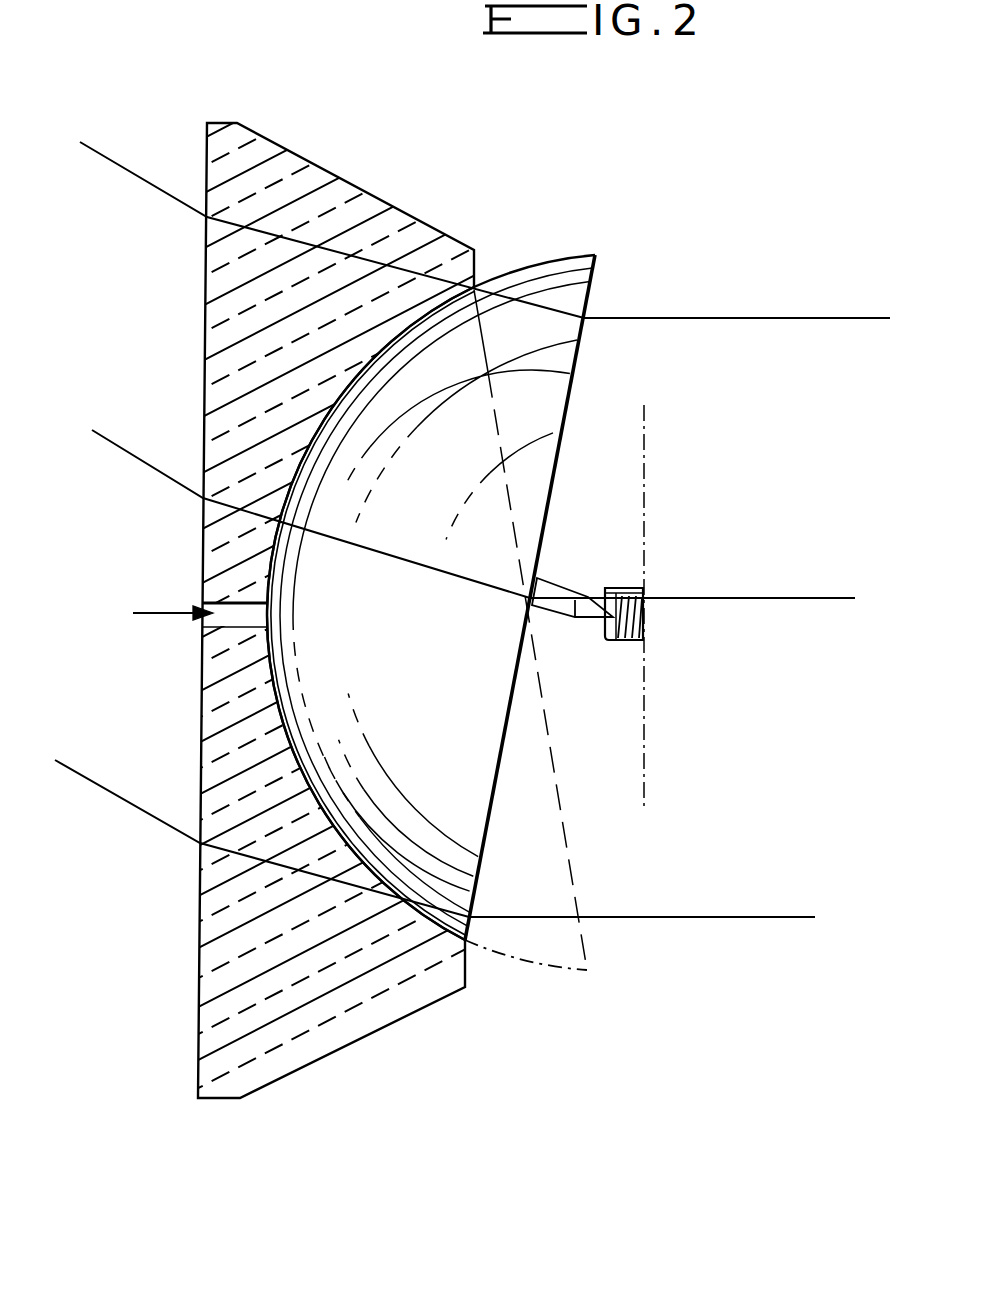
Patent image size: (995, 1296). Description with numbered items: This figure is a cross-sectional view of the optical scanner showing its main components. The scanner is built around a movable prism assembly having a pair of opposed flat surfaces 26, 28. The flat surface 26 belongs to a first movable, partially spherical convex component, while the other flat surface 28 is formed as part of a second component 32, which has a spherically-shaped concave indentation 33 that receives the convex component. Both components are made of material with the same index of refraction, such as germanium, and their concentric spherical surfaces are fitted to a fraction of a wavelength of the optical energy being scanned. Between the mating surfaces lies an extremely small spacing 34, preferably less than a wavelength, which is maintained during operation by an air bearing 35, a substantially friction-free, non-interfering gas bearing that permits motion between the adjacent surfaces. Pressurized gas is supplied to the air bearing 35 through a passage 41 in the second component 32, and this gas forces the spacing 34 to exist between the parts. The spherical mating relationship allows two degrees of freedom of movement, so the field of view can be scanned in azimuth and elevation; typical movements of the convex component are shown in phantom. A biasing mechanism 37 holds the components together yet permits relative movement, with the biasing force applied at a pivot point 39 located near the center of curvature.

The flat surface 26 is at (590, 372).
The flat surface 28 is at (203, 754).
The second component 32 is at (213, 936).
The spherically-shaped concave indentation 33 is at (372, 862).
The spacing 34 is at (285, 704).
The air bearing 35 is at (236, 616).
The biasing mechanism 37 is at (585, 574).
The pivot point 39 is at (613, 618).
The passage 41 is at (233, 612).